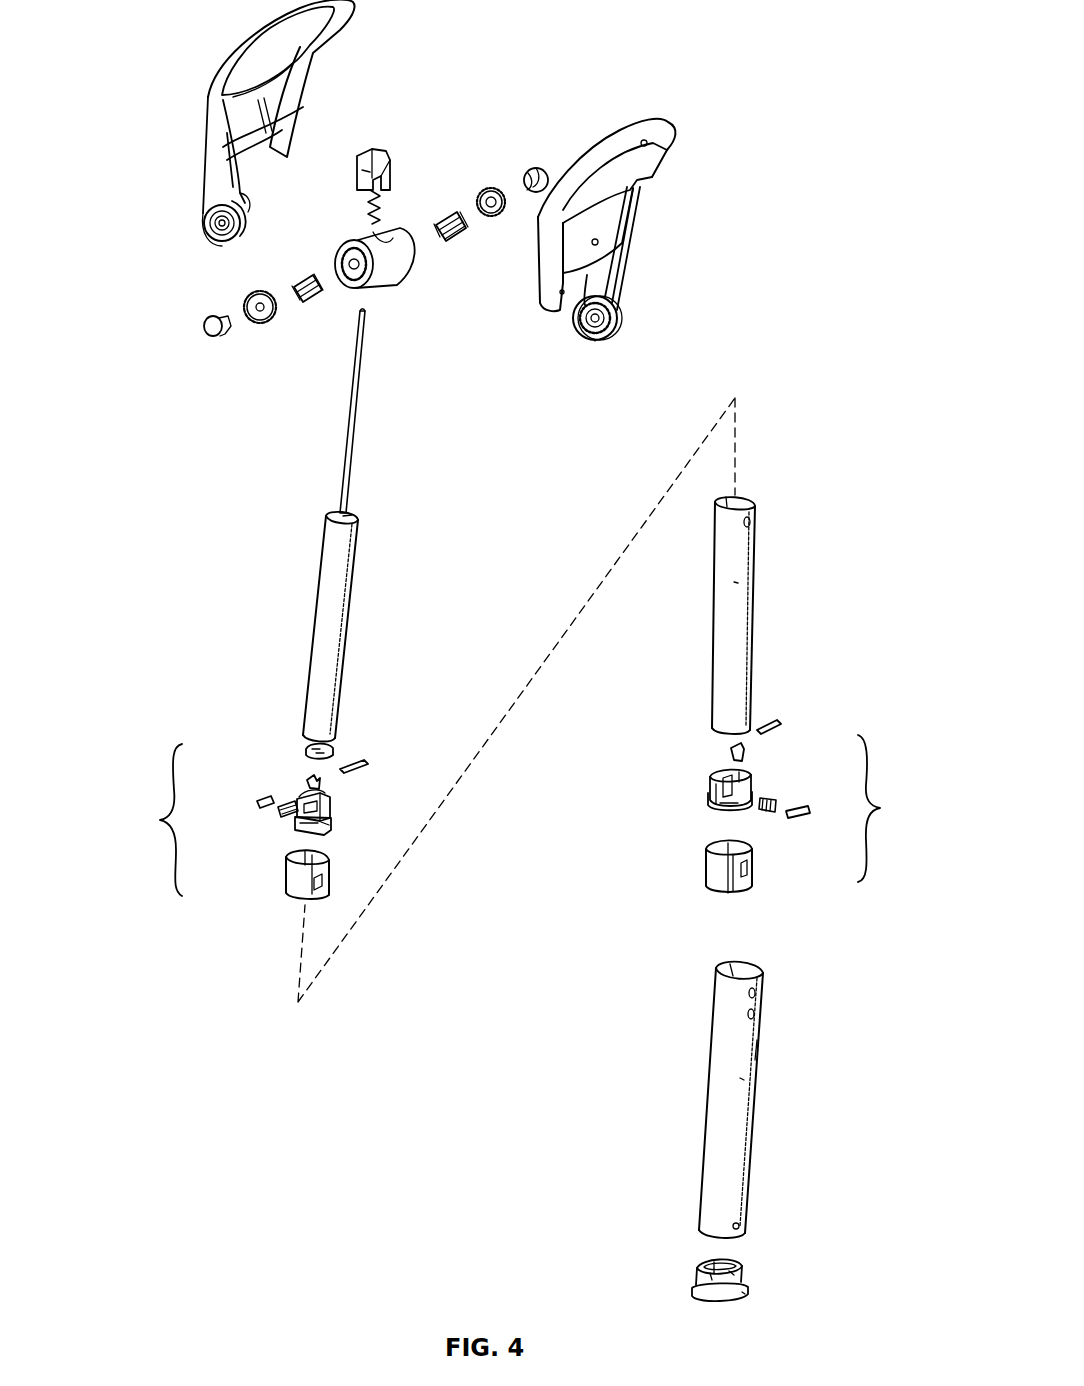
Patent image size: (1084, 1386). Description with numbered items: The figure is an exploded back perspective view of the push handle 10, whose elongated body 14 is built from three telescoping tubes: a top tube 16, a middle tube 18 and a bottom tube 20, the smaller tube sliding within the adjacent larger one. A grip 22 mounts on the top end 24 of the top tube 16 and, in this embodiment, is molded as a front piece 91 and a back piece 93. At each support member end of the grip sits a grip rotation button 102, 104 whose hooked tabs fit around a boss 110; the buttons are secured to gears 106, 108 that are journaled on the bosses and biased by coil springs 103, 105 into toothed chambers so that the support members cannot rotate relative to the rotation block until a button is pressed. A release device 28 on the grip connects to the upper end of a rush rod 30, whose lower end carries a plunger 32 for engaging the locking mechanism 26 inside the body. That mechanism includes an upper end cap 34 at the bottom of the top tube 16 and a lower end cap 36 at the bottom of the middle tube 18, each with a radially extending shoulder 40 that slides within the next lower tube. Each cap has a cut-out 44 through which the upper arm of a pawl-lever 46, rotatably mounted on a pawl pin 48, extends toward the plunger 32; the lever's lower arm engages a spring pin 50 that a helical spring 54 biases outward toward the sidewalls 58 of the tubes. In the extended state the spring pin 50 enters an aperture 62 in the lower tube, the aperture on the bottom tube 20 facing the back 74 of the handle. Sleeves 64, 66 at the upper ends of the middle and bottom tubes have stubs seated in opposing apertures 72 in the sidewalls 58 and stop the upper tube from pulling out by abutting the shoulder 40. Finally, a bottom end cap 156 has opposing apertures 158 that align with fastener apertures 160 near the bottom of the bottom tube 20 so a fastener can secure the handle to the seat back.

The push handle 10 is at (748, 327).
The elongated body 14 is at (768, 517).
The top tube 16 is at (345, 600).
The middle tube 18 is at (748, 628).
The bottom tube 20 is at (716, 1162).
The grip 22 is at (693, 122).
The top end 24 is at (350, 527).
The locking mechanism 26 is at (519, 815).
The release device 28 is at (380, 155).
The rush rod 30 is at (352, 410).
The plunger 32 is at (308, 750).
The upper end cap 34 is at (300, 828).
The lower end cap 36 is at (702, 787).
The shoulder 40 is at (300, 868).
The cut-out 44 is at (308, 797).
The pawl-lever 46 is at (322, 780).
The pawl pin 48 is at (358, 760).
The spring pin 50 is at (258, 800).
The helical spring 54 is at (280, 812).
The sidewall 58 is at (734, 582).
The aperture 62 is at (755, 1015).
The sleeve 64 is at (296, 898).
The sleeve 66 is at (702, 871).
The aperture 72 is at (745, 522).
The back 74 is at (758, 1040).
The front piece 91 is at (240, 50).
The back piece 93 is at (584, 175).
The grip rotation button 102 is at (203, 330).
The coil spring 103 is at (302, 310).
The grip rotation button 104 is at (529, 170).
The coil spring 105 is at (456, 244).
The gear 106 is at (255, 294).
The gear 108 is at (484, 192).
The boss 110 is at (582, 336).
The bottom end cap 156 is at (740, 1272).
The aperture 158 is at (714, 1270).
The fastener aperture 160 is at (742, 1226).